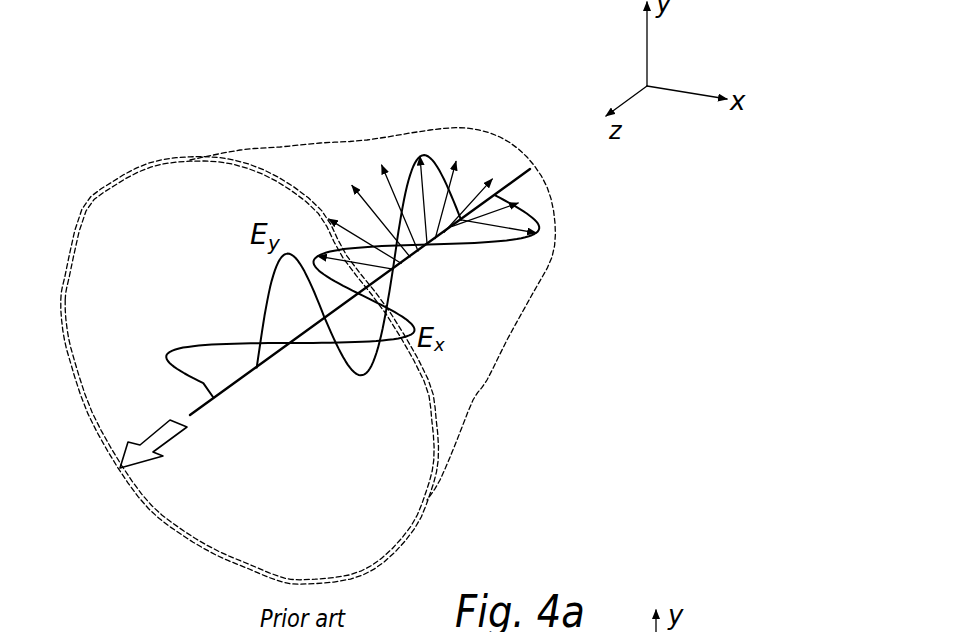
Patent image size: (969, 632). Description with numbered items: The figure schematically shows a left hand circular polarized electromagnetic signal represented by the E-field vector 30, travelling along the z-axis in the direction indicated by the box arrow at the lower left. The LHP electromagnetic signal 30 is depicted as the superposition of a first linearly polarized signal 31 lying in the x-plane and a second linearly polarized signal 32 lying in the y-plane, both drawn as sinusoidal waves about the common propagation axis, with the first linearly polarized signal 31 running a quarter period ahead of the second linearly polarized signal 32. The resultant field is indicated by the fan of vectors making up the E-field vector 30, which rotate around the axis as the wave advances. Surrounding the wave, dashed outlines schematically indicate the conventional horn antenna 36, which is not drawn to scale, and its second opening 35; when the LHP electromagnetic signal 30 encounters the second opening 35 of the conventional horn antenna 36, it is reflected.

The E-field vector 30 is at (366, 197).
The first linearly polarized signal 31 is at (397, 318).
The second linearly polarized signal 32 is at (272, 270).
The second opening 35 is at (110, 379).
The conventional horn antenna 36 is at (282, 157).